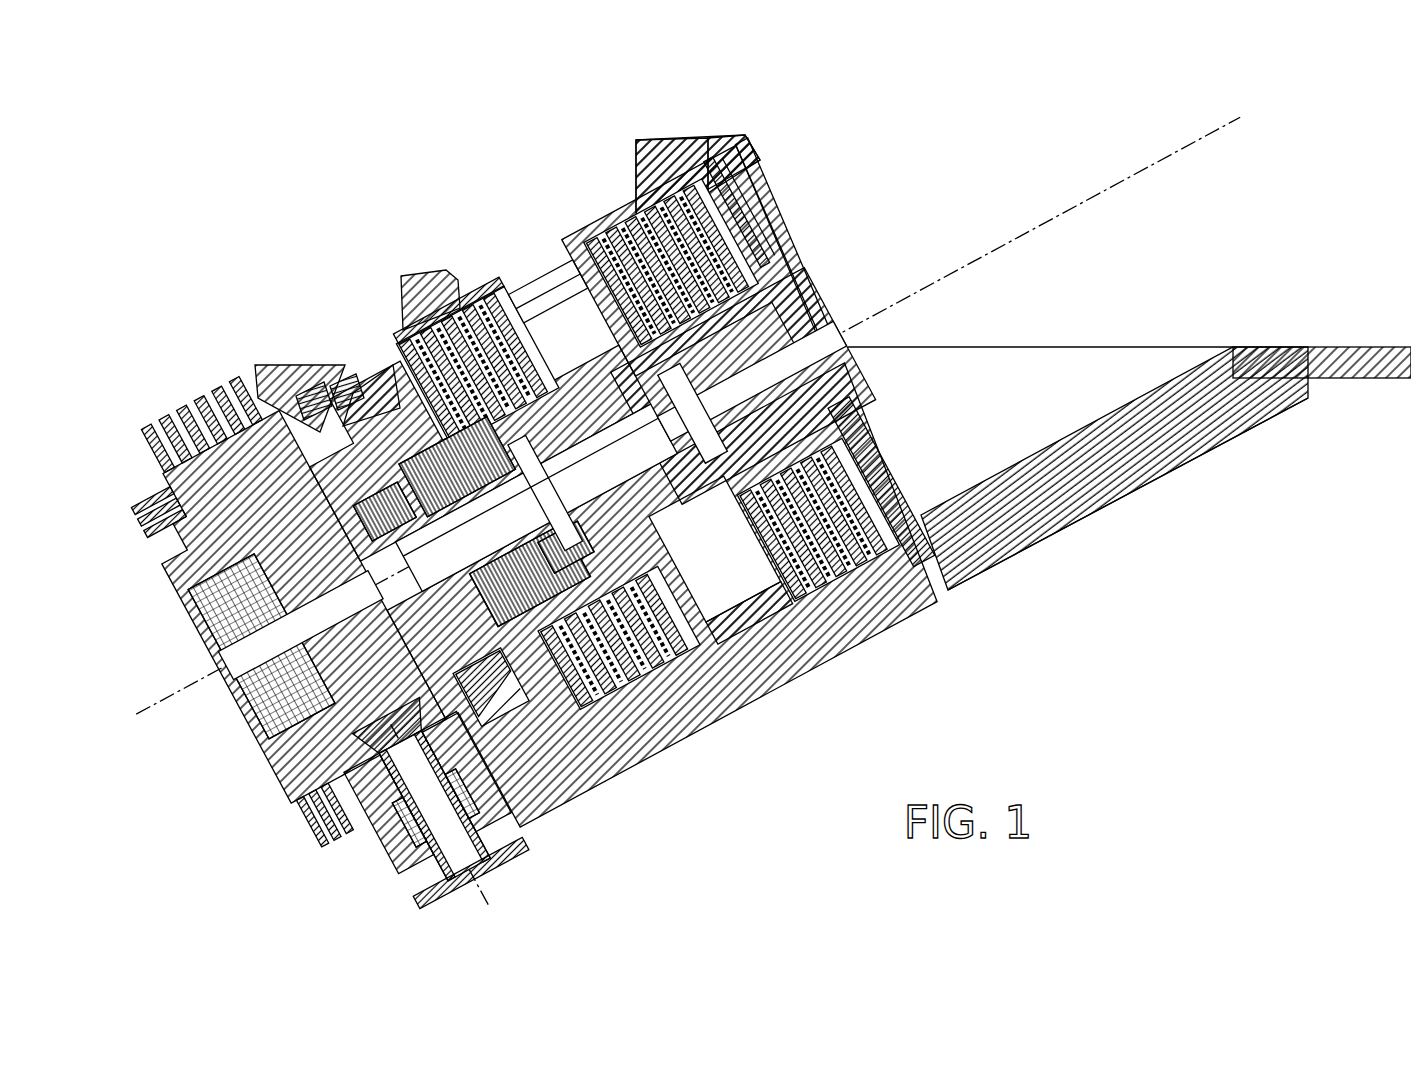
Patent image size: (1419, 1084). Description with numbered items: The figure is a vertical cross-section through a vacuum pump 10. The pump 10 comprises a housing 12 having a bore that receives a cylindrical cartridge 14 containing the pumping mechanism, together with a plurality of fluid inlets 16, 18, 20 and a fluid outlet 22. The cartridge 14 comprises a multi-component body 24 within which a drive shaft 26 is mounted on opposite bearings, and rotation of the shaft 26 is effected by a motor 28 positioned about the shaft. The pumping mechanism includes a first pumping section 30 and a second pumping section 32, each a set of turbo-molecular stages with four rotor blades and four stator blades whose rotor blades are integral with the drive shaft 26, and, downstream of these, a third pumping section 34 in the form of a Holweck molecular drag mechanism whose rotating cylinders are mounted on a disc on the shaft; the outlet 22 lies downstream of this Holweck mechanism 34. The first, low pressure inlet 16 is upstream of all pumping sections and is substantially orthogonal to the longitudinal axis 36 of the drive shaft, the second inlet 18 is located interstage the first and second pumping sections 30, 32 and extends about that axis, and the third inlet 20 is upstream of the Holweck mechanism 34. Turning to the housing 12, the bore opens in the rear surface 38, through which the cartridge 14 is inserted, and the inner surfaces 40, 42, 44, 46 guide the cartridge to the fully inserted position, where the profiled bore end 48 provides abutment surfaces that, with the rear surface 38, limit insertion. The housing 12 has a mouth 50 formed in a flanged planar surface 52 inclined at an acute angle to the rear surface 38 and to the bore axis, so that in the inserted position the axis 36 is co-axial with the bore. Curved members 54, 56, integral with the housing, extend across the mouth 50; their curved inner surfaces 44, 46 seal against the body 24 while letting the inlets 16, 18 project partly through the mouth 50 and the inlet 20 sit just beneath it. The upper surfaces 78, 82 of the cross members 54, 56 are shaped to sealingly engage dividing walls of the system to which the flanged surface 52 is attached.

The pump 10 is at (1140, 568).
The housing 12 is at (832, 645).
The cartridge 14 is at (186, 598).
The first inlet 16 is at (790, 245).
The second inlet 18 is at (540, 255).
The third inlet 20 is at (352, 355).
The fluid outlet 22 is at (440, 882).
The multi-component body 24 is at (580, 722).
The drive shaft 26 is at (625, 460).
The motor 28 is at (395, 470).
The first pumping section 30 is at (845, 570).
The second pumping section 32 is at (668, 665).
The third pumping section 34 is at (307, 397).
The longitudinal axis 36 is at (998, 248).
The rear surface 38 is at (495, 782).
The inner surface 40 is at (735, 625).
The inner surface 42 is at (338, 352).
The curved inner surface 44 is at (640, 185).
The curved inner surface 46 is at (470, 300).
The profiled end of bore 48 is at (740, 150).
The mouth 50 is at (1120, 338).
The flanged planar surface 52 is at (268, 357).
The curved member 54 is at (668, 136).
The curved member 56 is at (425, 280).
The upper surface 78 is at (712, 130).
The upper surface 82 is at (395, 268).